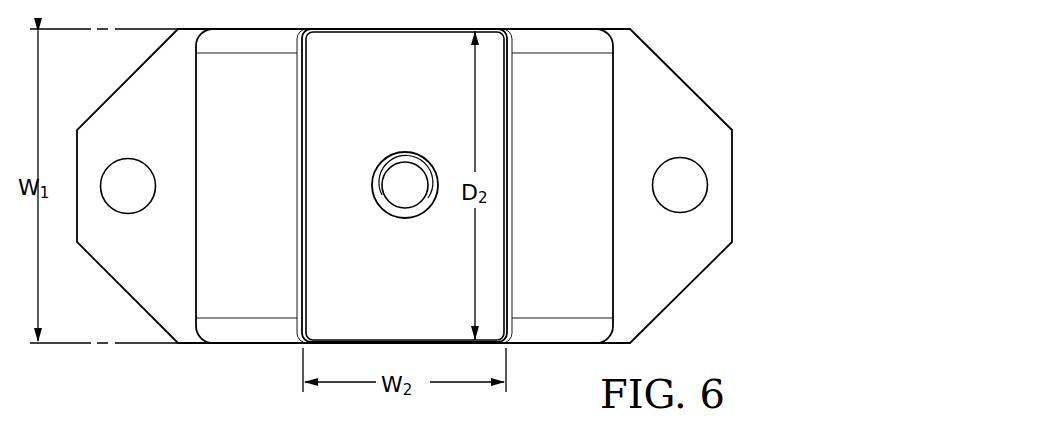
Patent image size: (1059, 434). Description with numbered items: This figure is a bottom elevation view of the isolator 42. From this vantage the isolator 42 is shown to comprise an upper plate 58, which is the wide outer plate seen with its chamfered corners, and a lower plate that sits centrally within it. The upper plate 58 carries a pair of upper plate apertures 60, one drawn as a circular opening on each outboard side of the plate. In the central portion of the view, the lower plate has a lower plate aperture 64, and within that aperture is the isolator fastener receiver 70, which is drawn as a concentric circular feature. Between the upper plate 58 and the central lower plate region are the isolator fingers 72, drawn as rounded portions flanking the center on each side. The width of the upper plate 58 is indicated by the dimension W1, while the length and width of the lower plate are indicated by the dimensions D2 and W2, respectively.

The isolator 42 is at (703, 44).
The upper plate 58 is at (155, 250).
The upper plate apertures 60 is at (125, 198).
The lower plate aperture 64 is at (397, 179).
The isolator fastener receiver 70 is at (423, 172).
The isolator fingers 72 is at (238, 268).